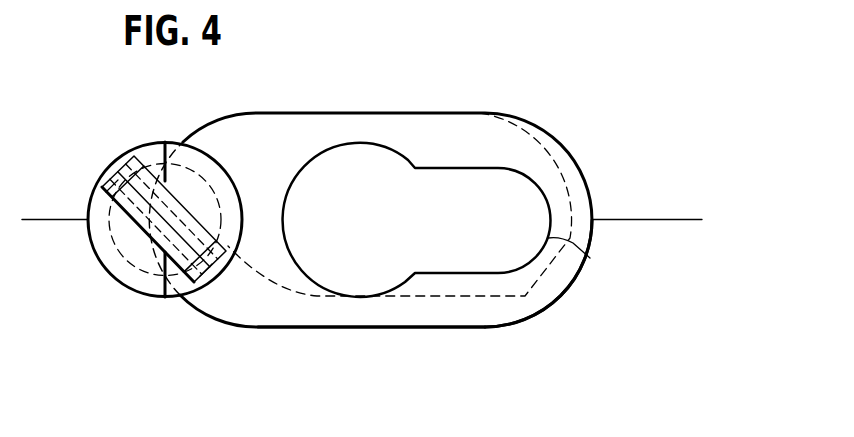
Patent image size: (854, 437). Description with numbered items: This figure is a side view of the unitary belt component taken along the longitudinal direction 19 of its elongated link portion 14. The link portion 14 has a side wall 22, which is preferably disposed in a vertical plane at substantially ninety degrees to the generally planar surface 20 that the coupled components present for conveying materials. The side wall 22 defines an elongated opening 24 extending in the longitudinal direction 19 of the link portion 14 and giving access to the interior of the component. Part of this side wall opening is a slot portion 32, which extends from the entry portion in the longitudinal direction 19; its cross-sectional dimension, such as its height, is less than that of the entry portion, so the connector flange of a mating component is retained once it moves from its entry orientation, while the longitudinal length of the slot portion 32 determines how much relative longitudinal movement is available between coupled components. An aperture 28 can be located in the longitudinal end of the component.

The elongated link portion 14 is at (529, 326).
The longitudinal direction 19 is at (668, 216).
The planar surface 20 is at (426, 113).
The side wall 22 is at (278, 313).
The elongated opening 24 is at (400, 234).
The aperture 28 is at (322, 148).
The slot portion 32 is at (590, 258).